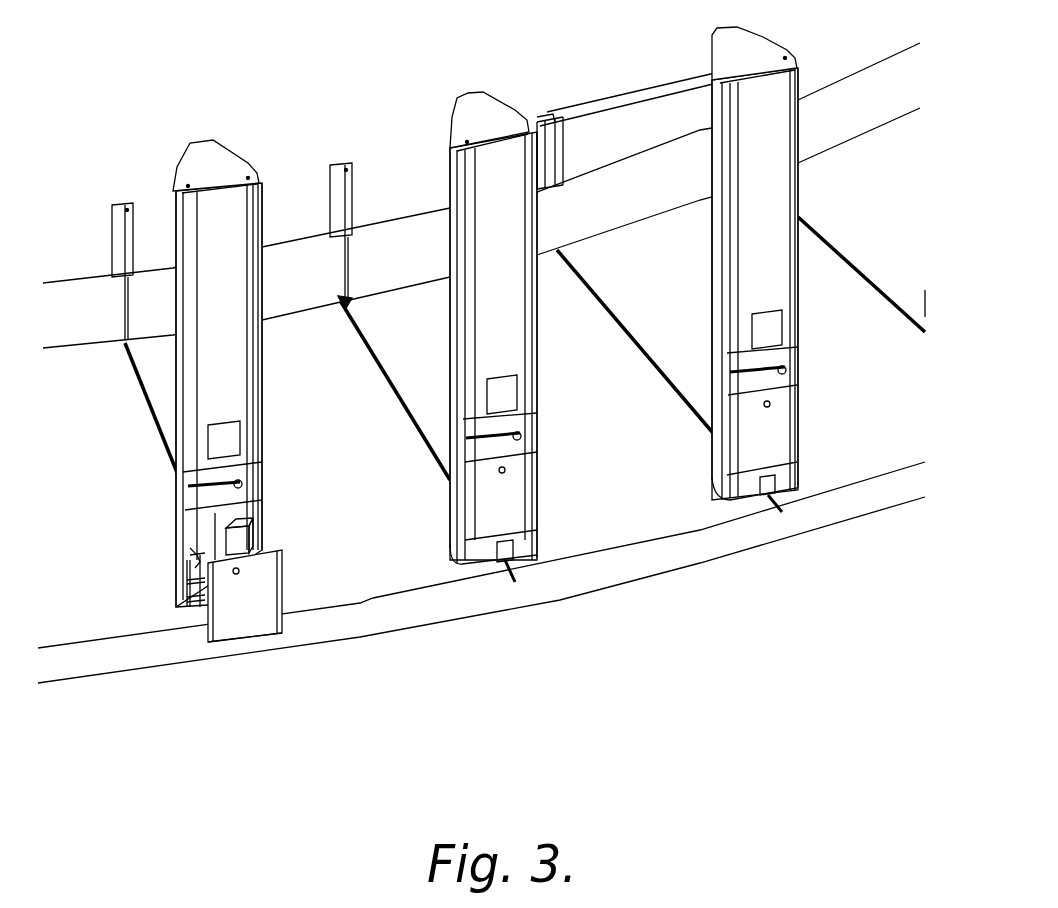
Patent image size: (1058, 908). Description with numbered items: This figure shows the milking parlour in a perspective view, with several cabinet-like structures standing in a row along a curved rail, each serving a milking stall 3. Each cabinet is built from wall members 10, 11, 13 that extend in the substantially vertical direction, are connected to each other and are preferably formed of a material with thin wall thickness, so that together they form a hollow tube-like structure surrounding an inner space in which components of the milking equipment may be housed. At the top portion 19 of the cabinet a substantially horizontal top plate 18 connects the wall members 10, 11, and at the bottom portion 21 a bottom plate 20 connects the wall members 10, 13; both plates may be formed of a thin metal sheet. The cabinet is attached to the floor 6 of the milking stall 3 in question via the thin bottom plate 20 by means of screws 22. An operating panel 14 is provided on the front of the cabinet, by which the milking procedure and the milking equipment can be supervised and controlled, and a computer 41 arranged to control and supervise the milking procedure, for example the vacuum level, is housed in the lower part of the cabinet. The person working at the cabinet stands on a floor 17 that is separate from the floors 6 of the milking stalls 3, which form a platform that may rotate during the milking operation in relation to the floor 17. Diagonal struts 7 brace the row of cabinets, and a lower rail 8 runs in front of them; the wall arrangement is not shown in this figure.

The milking stall 3 is at (497, 414).
The floor of milking stall 6 is at (93, 443).
The strut 7 is at (348, 298).
The lower rail 8 is at (369, 598).
The wall member 10 is at (224, 380).
The wall member 11 is at (237, 213).
The wall member 13 is at (182, 598).
The operating panel 14 is at (513, 380).
The floor 17 is at (250, 709).
The top plate 18 is at (218, 158).
The top portion 19 is at (224, 380).
The bottom plate 20 is at (197, 569).
The bottom portion 21 is at (187, 620).
The screws 22 is at (197, 560).
The computer 41 is at (250, 537).